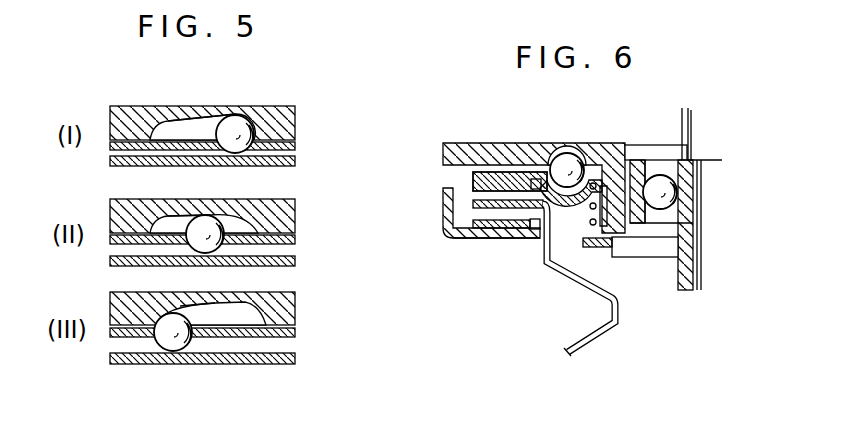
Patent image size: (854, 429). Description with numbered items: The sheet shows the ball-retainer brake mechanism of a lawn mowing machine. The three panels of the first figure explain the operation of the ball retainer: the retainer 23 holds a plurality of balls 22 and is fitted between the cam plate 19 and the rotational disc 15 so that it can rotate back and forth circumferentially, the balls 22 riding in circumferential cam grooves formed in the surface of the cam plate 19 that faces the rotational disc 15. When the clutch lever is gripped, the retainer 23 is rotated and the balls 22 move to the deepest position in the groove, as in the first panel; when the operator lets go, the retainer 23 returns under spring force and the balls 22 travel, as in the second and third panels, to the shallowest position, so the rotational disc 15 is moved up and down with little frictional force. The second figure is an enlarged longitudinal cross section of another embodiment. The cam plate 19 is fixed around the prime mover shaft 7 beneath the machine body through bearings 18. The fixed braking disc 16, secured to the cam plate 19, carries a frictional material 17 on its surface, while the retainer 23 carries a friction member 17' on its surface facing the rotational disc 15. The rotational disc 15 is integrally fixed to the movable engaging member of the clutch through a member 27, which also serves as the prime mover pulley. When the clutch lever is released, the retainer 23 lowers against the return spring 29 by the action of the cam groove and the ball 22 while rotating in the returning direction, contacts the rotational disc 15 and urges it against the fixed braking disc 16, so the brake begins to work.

The prime mover shaft 7 is at (681, 125).
The rotational disc 15 is at (473, 205).
The fixed braking disc 16 is at (461, 240).
The frictional material 17 is at (506, 252).
The friction member 17' is at (473, 182).
The bearings 18 is at (663, 208).
The cam plate 19 is at (470, 150).
The balls 22 is at (567, 164).
The retainer 23 is at (508, 178).
The member 27 is at (590, 338).
The return spring 29 is at (588, 224).